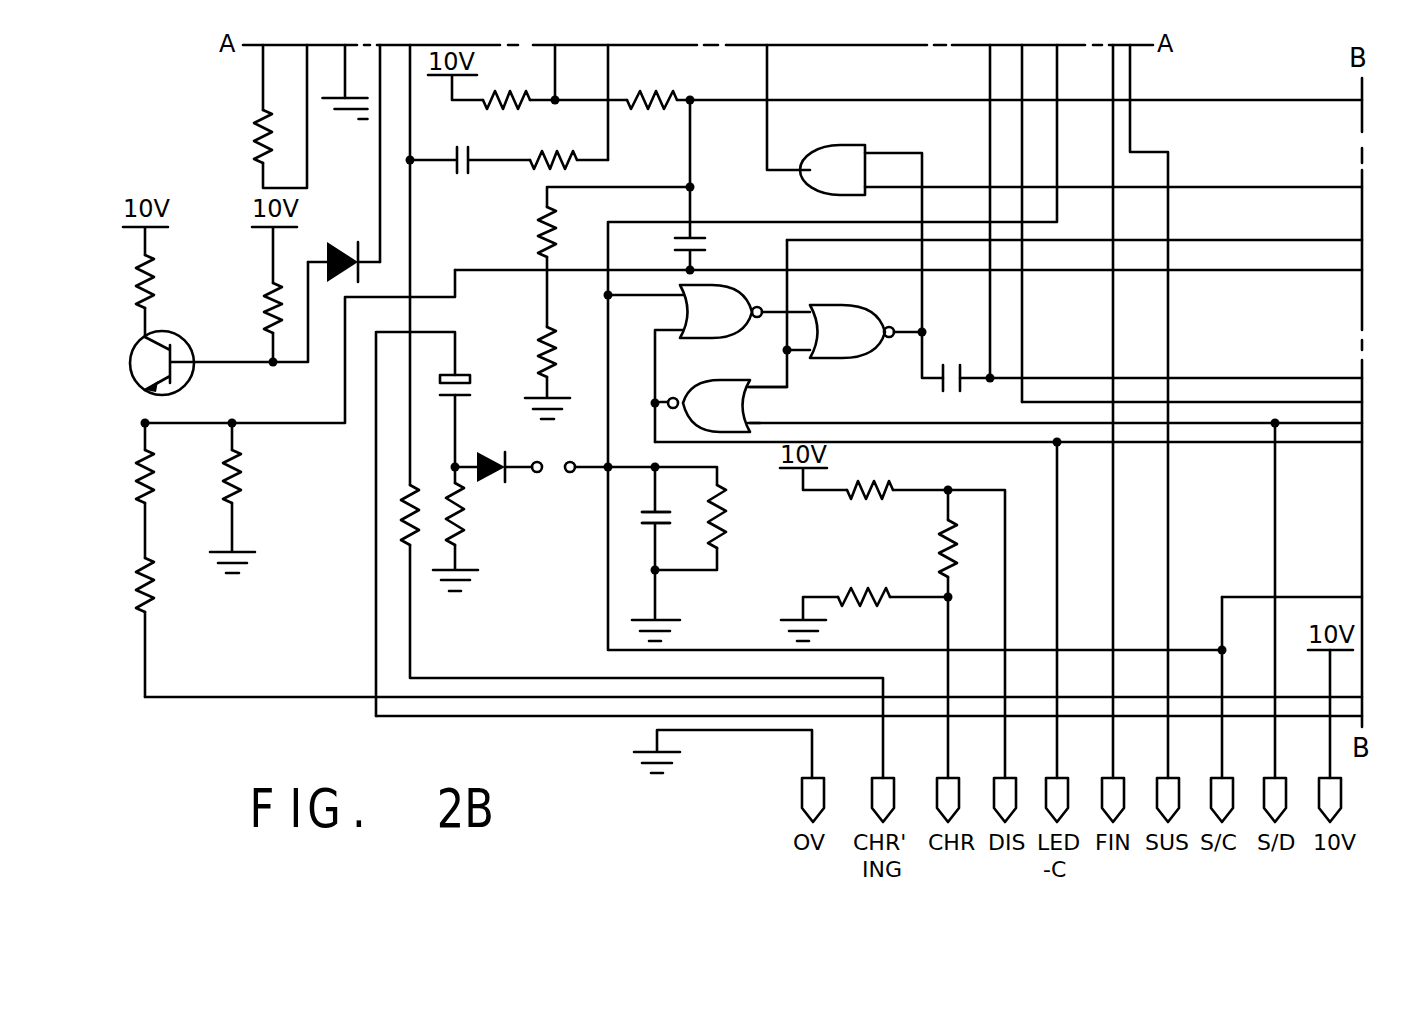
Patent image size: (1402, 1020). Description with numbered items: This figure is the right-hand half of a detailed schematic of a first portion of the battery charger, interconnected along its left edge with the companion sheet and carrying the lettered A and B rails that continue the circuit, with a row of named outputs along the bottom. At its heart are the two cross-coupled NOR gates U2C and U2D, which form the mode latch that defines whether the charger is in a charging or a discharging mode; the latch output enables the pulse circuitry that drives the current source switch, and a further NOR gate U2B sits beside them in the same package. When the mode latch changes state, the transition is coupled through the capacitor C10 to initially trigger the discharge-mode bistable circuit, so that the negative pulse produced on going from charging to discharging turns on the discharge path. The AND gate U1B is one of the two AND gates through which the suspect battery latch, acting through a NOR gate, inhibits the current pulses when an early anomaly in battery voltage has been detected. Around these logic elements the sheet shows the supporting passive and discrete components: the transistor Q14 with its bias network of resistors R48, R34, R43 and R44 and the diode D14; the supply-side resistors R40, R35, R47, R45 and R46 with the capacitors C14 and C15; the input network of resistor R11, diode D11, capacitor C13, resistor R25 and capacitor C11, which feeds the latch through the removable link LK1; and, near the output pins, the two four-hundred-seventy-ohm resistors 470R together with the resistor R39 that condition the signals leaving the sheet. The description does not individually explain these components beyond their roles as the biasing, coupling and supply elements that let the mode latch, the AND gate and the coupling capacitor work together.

The resistor R40 is at (252, 138).
The resistor R35 is at (505, 108).
The capacitor C14 is at (470, 172).
The resistor R47 is at (655, 98).
The resistor R45 is at (538, 225).
The resistor R46 is at (540, 328).
The capacitor C15 is at (678, 243).
The AND gate U1B is at (852, 150).
The resistor R48 is at (137, 280).
The resistor R34 is at (268, 296).
The transistor Q14 is at (193, 372).
The diode D14 is at (340, 243).
The resistor R43 is at (140, 470).
The resistor R44 is at (138, 597).
The resistor R11 is at (428, 500).
The capacitor C13 is at (470, 380).
The diode D11 is at (480, 482).
The link LK1 is at (556, 476).
The resistor R25 is at (460, 535).
The capacitor C11 is at (670, 510).
The NOR gate U2D is at (740, 317).
The NOR gate U2B is at (838, 318).
The NOR gate U2C is at (735, 400).
The capacitor C10 is at (952, 362).
The 470 ohm resistor 470R is at (885, 490).
The resistor R39 is at (955, 537).